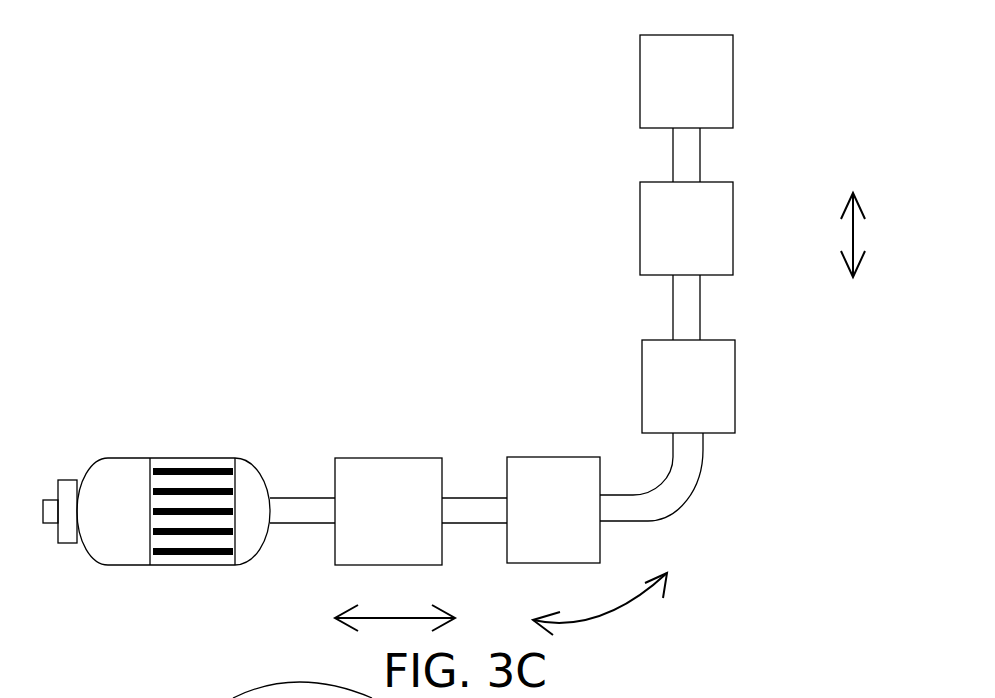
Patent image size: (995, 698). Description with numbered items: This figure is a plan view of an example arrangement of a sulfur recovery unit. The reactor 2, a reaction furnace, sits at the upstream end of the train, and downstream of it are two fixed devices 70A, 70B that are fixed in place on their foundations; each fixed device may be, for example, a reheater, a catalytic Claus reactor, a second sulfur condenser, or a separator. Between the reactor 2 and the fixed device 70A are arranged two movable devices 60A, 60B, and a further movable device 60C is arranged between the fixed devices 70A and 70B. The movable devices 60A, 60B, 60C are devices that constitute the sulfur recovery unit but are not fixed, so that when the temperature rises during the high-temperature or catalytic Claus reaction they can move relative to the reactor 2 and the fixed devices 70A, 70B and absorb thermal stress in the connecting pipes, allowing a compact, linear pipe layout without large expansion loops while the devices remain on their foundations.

The reactor 2 is at (243, 480).
The movable device 60A is at (355, 467).
The movable device 60B is at (522, 467).
The movable device 60C is at (733, 228).
The fixed device 70A is at (735, 390).
The fixed device 70B is at (733, 83).